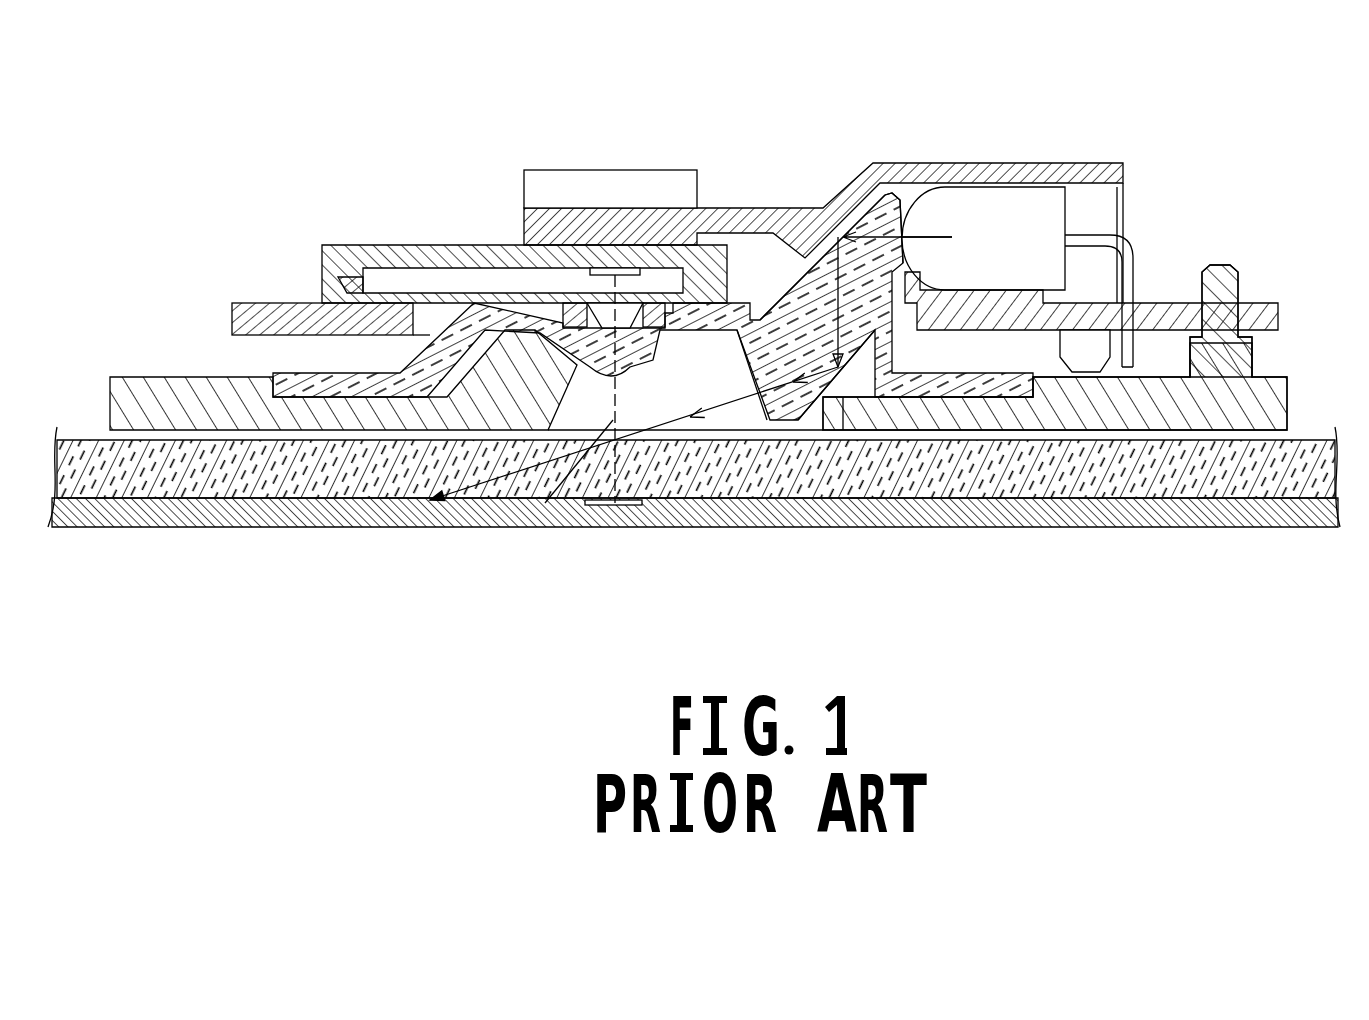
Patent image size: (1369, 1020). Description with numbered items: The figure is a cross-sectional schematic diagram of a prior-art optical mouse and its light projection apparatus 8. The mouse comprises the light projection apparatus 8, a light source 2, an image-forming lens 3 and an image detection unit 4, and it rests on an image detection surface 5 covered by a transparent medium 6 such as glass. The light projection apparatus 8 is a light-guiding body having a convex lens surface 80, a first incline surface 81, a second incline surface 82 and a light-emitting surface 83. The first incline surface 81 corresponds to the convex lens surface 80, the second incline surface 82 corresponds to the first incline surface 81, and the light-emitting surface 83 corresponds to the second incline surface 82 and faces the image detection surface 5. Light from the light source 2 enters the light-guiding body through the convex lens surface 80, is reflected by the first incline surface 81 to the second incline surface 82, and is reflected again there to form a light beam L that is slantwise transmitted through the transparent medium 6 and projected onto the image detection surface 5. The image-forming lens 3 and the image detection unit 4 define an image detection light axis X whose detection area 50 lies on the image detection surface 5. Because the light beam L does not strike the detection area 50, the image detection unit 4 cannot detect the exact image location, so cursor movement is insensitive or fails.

The light source 2 is at (995, 215).
The image-forming lens 3 is at (600, 367).
The image detection unit 4 is at (595, 268).
The image detection surface 5 is at (272, 505).
The transparent medium 6 is at (198, 470).
The light projection apparatus 8 is at (790, 307).
The detection area 50 is at (617, 505).
The convex lens surface 80 is at (912, 203).
The first incline surface 81 is at (816, 303).
The second incline surface 82 is at (834, 377).
The light-emitting surface 83 is at (754, 335).
The light beam L is at (667, 428).
The image detection light axis X is at (545, 503).